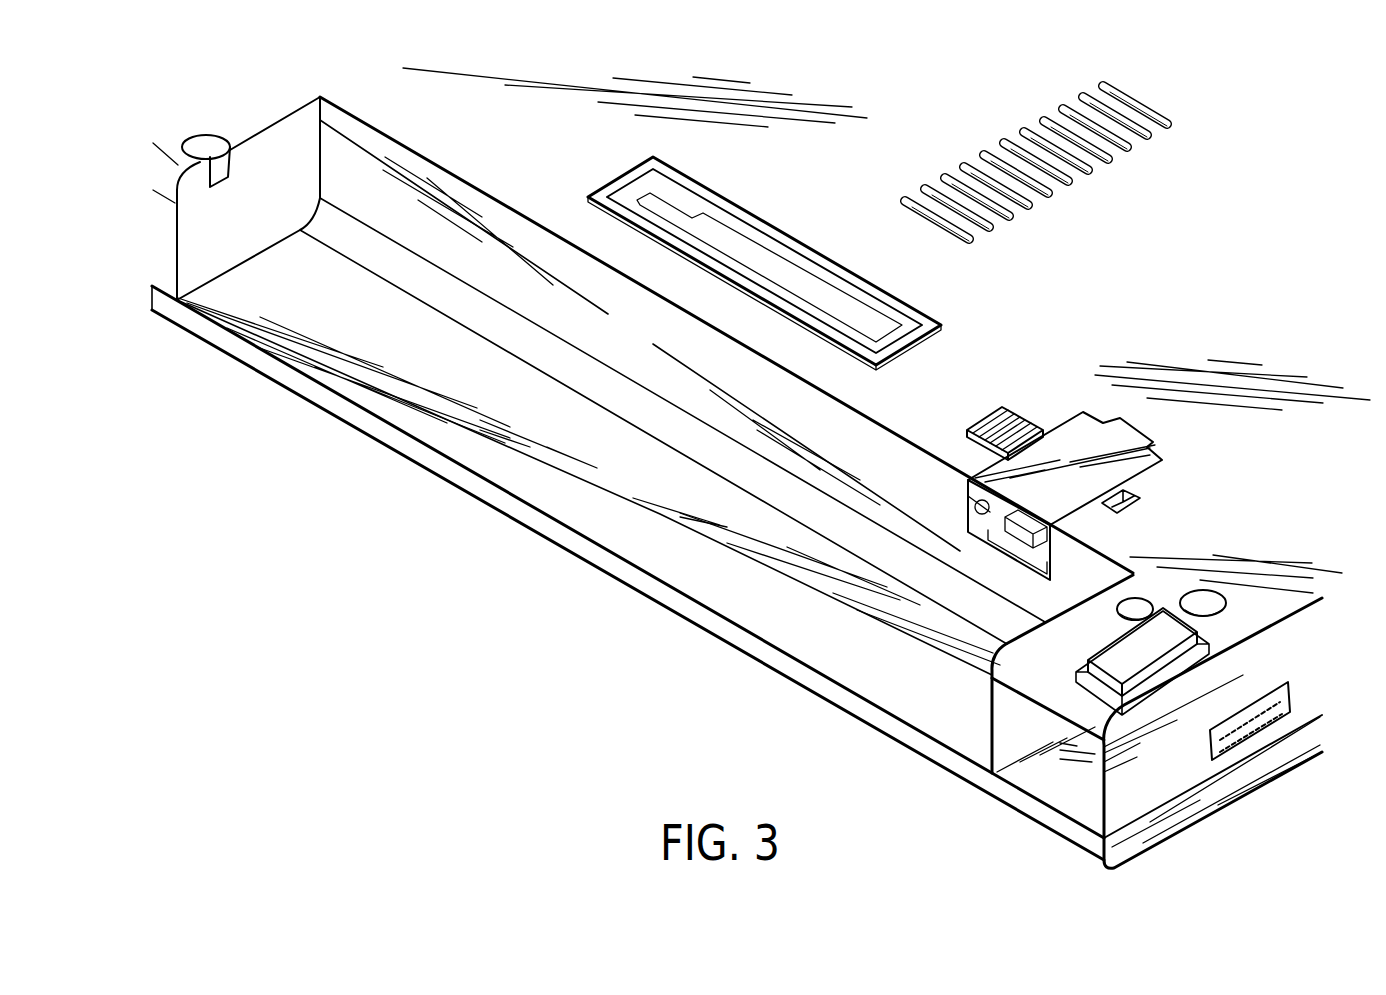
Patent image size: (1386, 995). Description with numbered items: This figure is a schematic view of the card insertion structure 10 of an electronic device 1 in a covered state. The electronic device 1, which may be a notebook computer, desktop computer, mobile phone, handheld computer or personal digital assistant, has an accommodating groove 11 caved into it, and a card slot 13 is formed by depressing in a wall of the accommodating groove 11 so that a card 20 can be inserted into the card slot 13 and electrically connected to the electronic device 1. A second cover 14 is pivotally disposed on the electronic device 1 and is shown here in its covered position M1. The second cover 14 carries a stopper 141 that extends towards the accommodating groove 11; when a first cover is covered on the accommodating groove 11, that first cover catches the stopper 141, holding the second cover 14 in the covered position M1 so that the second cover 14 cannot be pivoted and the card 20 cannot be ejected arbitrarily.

The electronic device 1 is at (152, 286).
The card insertion structure 10 is at (840, 727).
The accommodating groove 11 is at (828, 667).
The card slot 13 is at (968, 515).
The second cover 14 is at (1063, 505).
The stopper 141 is at (1005, 530).
The card 20 is at (1012, 545).
The covered position M1 is at (968, 480).